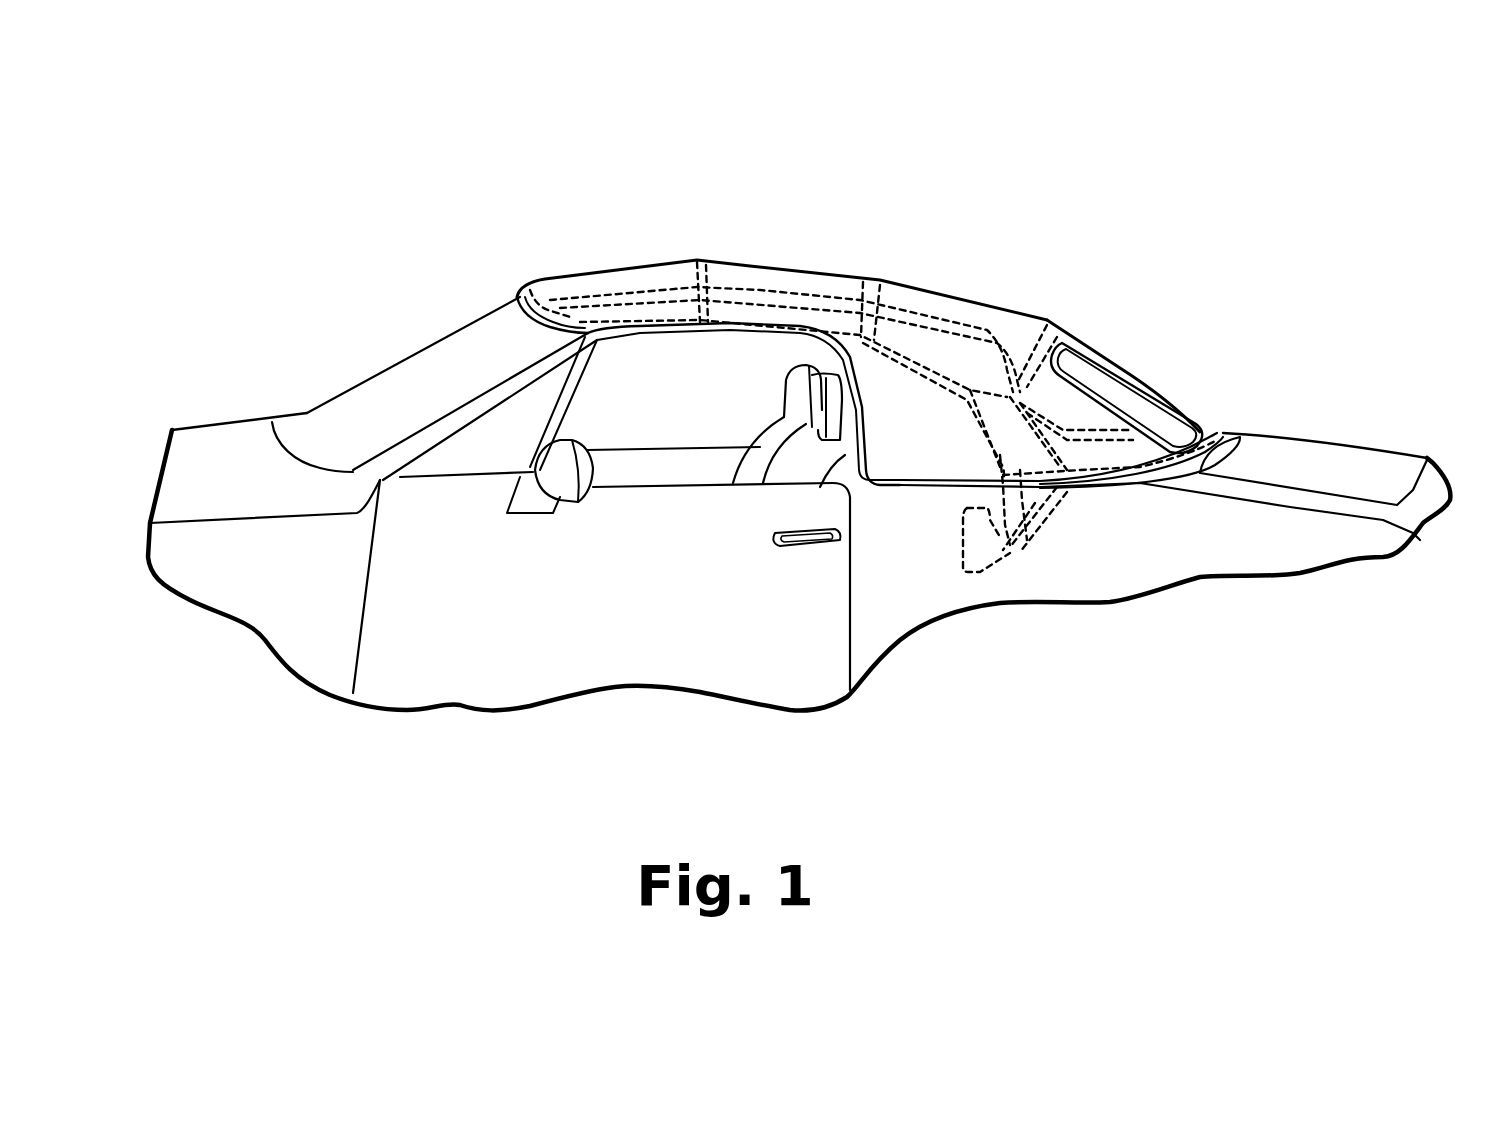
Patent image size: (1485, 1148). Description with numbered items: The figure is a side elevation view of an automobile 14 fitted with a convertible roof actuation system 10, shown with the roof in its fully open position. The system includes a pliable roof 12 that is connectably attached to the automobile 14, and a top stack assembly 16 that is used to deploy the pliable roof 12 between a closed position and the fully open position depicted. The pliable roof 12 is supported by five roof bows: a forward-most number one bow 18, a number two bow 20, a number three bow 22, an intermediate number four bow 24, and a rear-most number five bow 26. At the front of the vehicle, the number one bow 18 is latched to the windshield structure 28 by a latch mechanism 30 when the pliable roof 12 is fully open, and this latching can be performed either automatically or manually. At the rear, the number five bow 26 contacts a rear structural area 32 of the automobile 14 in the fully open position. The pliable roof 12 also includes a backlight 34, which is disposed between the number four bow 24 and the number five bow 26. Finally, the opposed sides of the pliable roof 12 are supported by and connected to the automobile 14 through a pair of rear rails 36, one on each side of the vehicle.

The convertible roof actuation system 10 is at (348, 213).
The pliable roof 12 is at (938, 298).
The automobile 14 is at (252, 432).
The top stack assembly 16 is at (977, 550).
The number one bow 18 is at (532, 290).
The number two bow 20 is at (707, 273).
The number three bow 22 is at (873, 287).
The number four bow 24 is at (1047, 330).
The number five bow 26 is at (1223, 432).
The windshield structure 28 is at (527, 297).
The latch mechanism 30 is at (542, 300).
The rear structural area 32 is at (1345, 472).
The backlight 34 is at (1113, 387).
The rear rails 36 is at (907, 357).